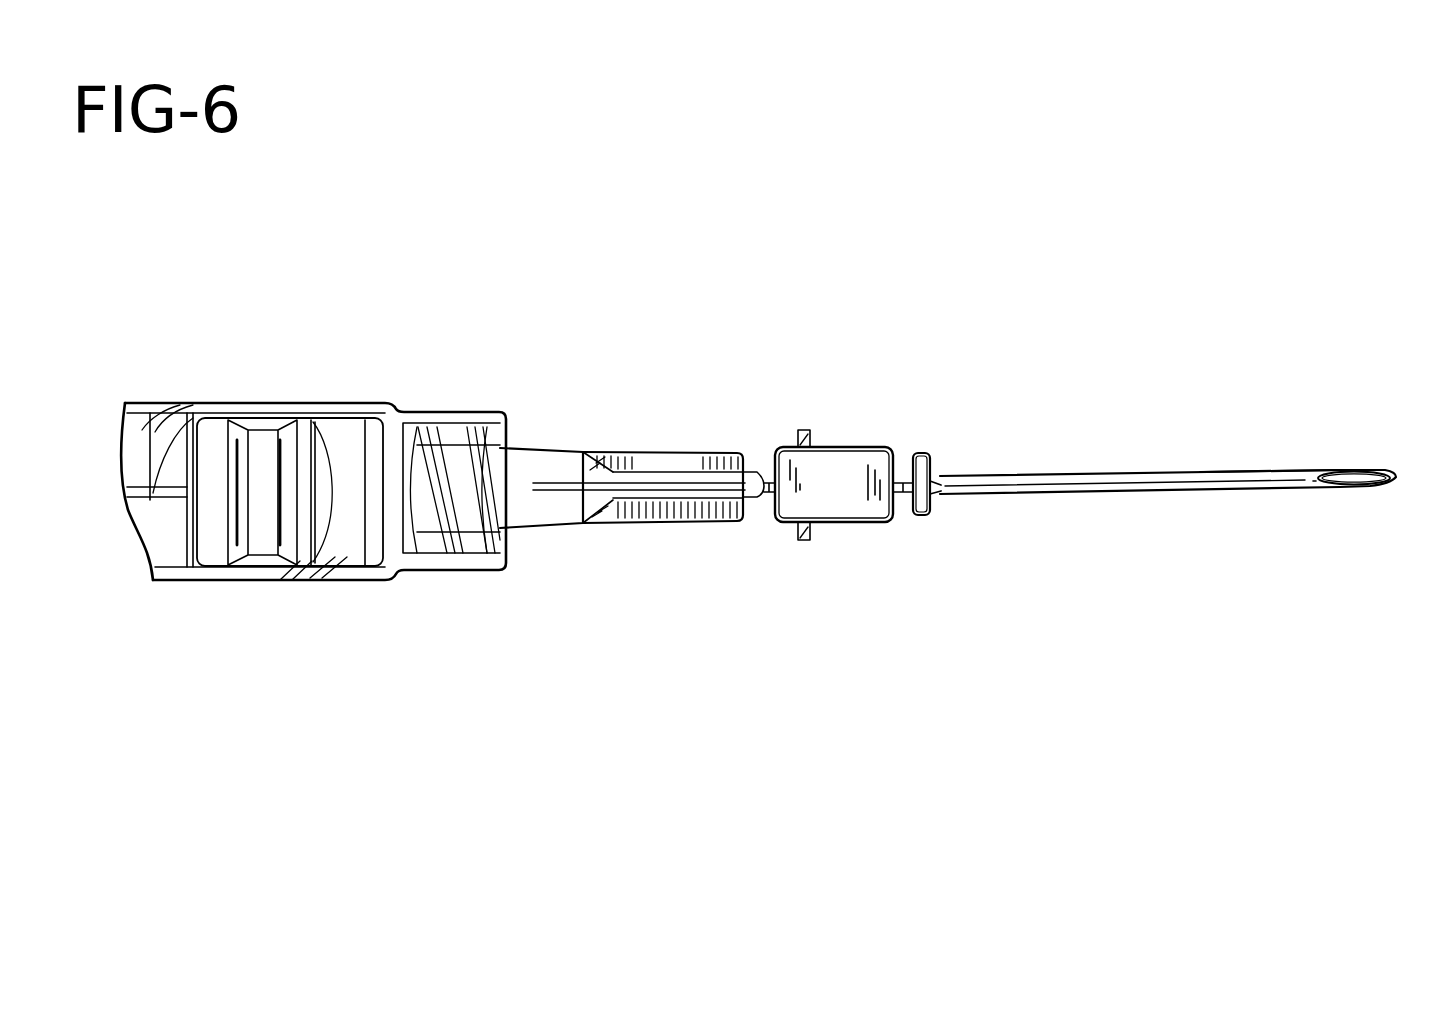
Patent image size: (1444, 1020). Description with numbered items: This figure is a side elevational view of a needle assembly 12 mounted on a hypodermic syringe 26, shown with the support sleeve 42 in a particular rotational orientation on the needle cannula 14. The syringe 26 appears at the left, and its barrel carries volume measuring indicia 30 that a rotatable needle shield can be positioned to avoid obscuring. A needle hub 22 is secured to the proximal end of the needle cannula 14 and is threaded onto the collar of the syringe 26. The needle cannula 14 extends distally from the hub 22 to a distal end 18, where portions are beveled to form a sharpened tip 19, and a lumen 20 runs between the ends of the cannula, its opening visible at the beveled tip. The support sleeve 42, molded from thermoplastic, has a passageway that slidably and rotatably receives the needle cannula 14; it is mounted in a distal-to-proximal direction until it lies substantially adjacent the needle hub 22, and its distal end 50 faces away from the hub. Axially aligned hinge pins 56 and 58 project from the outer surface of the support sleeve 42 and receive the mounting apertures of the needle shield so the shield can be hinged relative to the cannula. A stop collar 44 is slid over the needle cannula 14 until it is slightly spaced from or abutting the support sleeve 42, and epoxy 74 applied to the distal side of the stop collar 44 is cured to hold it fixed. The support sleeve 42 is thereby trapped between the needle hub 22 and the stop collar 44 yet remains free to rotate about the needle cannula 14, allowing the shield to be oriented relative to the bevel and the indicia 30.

The needle assembly 12 is at (606, 430).
The needle cannula 14 is at (1158, 484).
The distal end 18 is at (1292, 476).
The sharpened tip 19 is at (1396, 478).
The lumen 20 is at (1360, 478).
The needle hub 22 is at (535, 508).
The hypodermic syringe 26 is at (359, 591).
The volume measuring indicia 30 is at (355, 446).
The support sleeve 42 is at (847, 473).
The stop collar 44 is at (945, 431).
The distal end 50 is at (893, 523).
The hinge pin 56 is at (800, 433).
The hinge pin 58 is at (800, 540).
The epoxy 74 is at (937, 489).